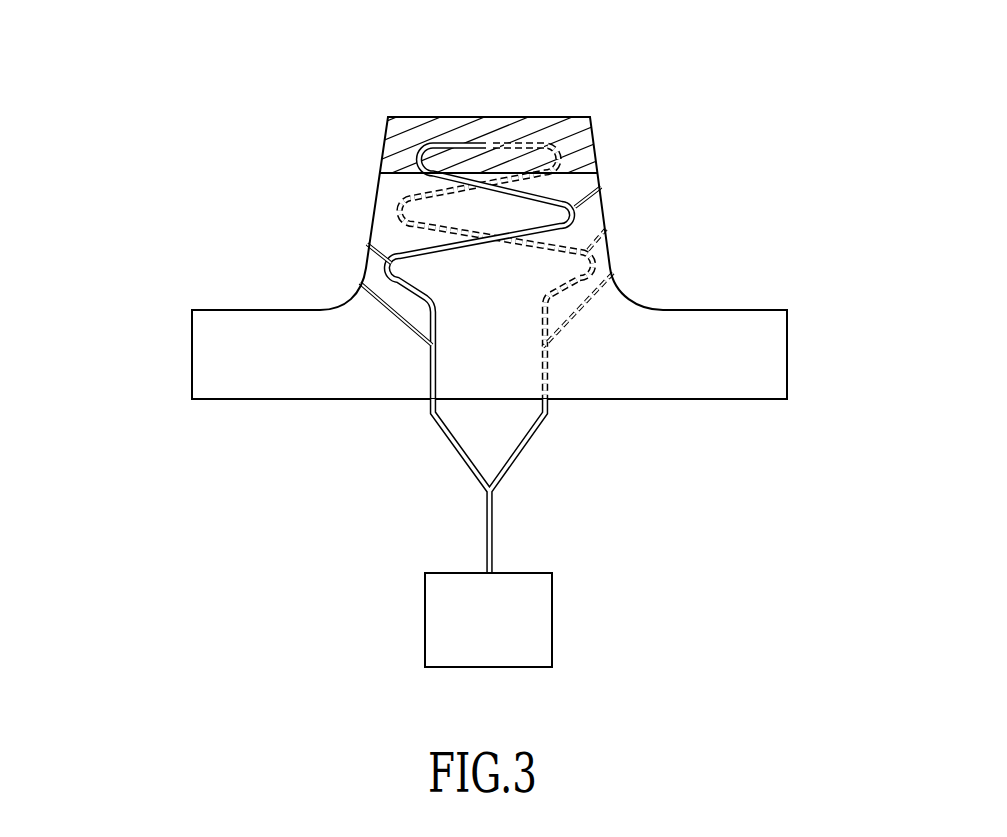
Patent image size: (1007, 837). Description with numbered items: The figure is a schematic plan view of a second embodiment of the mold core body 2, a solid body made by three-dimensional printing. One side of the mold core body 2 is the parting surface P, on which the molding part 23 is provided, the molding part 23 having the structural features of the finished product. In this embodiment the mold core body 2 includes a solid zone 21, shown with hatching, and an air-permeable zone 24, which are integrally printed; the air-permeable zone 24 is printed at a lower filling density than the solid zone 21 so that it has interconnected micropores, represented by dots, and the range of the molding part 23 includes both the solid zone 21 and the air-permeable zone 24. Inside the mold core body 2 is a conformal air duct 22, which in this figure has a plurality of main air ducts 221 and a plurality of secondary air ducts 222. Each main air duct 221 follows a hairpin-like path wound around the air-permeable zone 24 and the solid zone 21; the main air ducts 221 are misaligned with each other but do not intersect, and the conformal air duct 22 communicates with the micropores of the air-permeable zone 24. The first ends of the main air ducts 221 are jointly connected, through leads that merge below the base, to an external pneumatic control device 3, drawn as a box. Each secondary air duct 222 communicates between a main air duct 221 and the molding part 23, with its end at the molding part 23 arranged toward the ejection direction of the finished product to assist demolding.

The mold core body 2 is at (266, 127).
The solid zone 21 is at (432, 128).
The conformal air duct 22 is at (210, 163).
The main air duct 221 is at (415, 243).
The secondary air duct 222 is at (380, 298).
The molding part 23 is at (378, 182).
The air-permeable zone 24 is at (693, 383).
The parting surface P is at (273, 309).
The pneumatic control device 3 is at (552, 619).